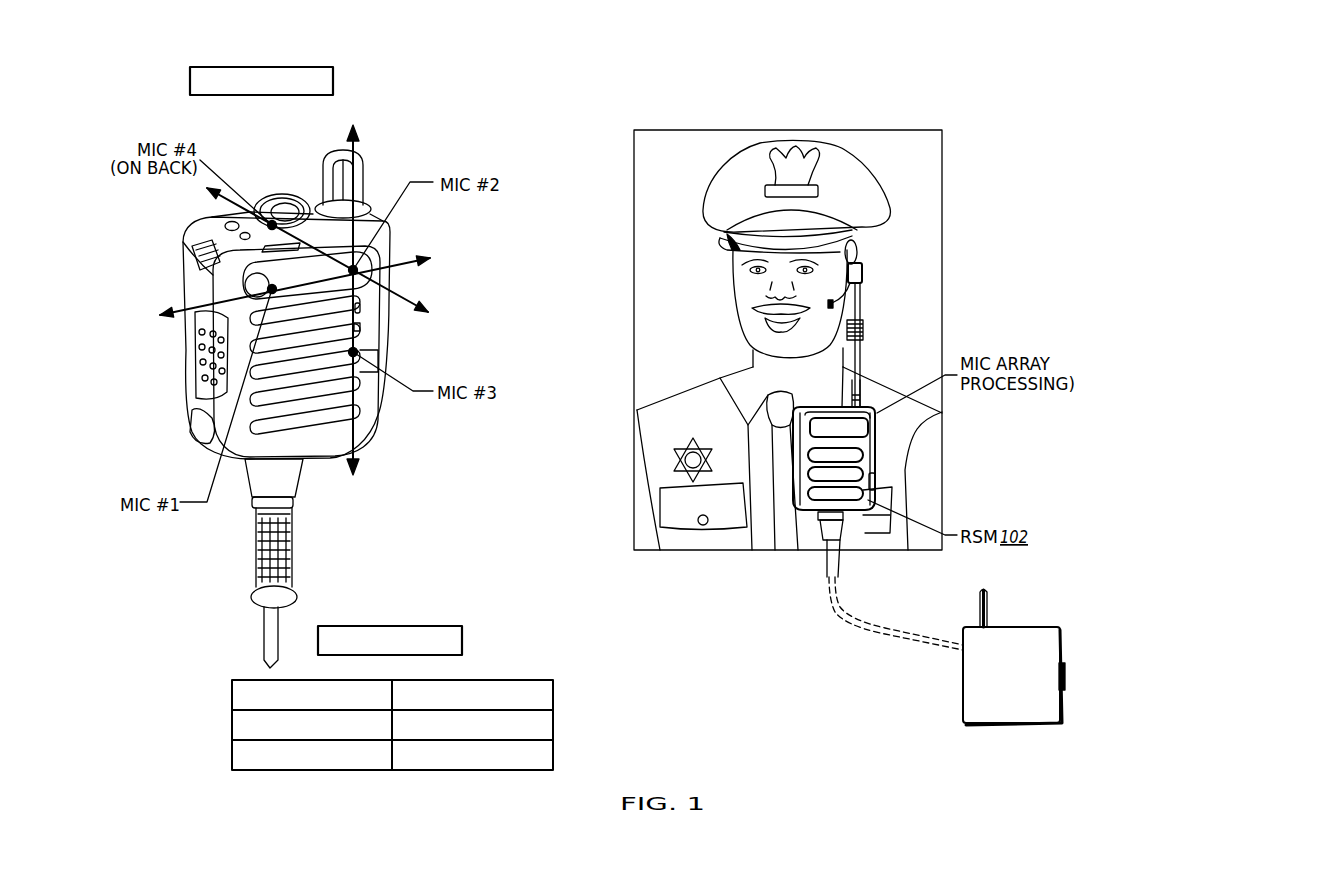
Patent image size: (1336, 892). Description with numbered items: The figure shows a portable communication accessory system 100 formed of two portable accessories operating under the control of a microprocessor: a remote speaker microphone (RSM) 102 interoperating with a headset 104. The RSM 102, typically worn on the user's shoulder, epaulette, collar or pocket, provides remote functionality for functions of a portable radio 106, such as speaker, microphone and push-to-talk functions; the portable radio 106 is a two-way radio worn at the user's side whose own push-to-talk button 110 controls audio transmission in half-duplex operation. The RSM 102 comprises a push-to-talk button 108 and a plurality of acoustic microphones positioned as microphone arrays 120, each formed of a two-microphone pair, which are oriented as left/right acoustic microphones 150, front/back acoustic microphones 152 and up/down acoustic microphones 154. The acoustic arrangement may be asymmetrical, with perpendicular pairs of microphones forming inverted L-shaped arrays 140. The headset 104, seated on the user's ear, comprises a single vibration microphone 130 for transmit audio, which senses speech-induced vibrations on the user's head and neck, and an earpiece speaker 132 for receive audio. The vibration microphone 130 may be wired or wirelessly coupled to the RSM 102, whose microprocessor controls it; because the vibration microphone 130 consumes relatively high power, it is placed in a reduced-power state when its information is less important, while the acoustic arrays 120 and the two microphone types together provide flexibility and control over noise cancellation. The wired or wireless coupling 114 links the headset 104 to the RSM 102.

The portable communication accessory system 100 is at (1068, 99).
The remote speaker microphone 102 is at (248, 160).
The headset 104 is at (1042, 294).
The portable radio 106 is at (962, 676).
The push-to-talk button 108 is at (197, 348).
The push-to-talk button 110 is at (1063, 675).
The earpiece / wired or wireless connection 114 is at (860, 272).
The microphone arrays 120 is at (562, 680).
The vibration microphone 130 is at (333, 82).
The earpiece speaker 132 is at (1037, 211).
The inverted L-shaped arrays 140 is at (355, 368).
The left/right acoustic microphones 150 is at (368, 278).
The front/back acoustic microphones 152 is at (383, 272).
The up/down acoustic microphones 154 is at (368, 325).